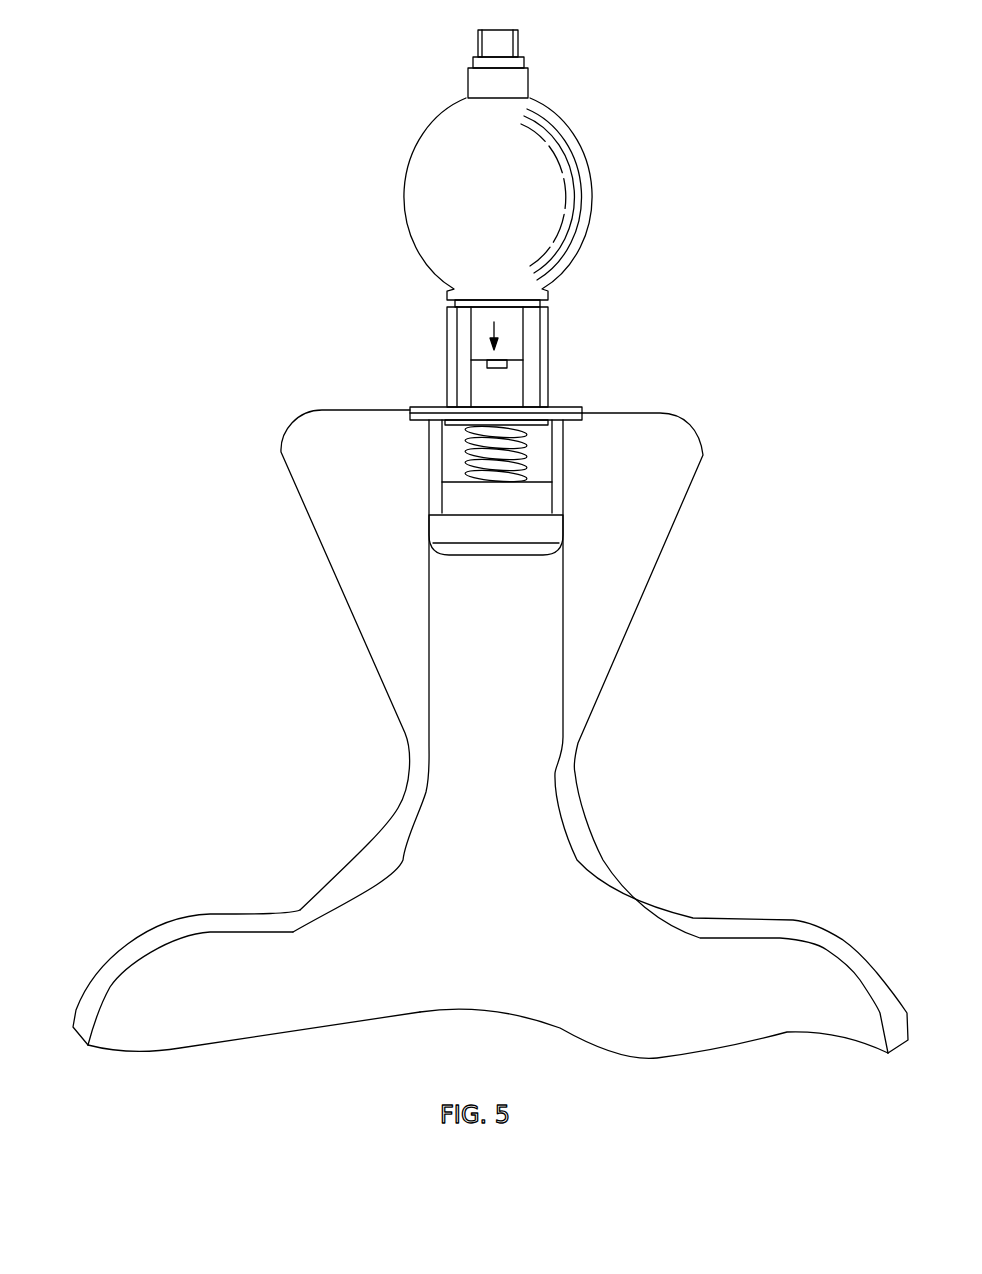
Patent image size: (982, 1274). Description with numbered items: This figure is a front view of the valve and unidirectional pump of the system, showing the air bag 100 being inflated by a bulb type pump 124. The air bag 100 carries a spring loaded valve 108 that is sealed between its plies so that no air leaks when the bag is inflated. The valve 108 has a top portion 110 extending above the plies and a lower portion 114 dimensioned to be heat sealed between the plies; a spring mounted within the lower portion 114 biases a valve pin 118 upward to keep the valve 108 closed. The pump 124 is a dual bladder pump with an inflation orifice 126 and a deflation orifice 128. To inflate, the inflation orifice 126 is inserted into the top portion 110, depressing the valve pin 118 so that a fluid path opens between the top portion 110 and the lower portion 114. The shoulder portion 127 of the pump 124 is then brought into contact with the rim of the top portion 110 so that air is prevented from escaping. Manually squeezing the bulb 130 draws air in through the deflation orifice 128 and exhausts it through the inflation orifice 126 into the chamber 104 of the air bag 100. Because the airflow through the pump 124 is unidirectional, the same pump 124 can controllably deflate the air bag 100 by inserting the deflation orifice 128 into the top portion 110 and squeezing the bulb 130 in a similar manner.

The air bag 100 is at (800, 898).
The chamber 104 is at (193, 952).
The spring loaded valve 108 is at (685, 475).
The top portion 110 is at (455, 331).
The lower portion 114 is at (450, 455).
The valve pin 118 is at (478, 382).
The bulb type pump 124 is at (634, 195).
The inflation orifice 126 is at (513, 338).
The shoulder portion 127 is at (519, 63).
The deflation orifice 128 is at (514, 46).
The bulb 130 is at (422, 185).